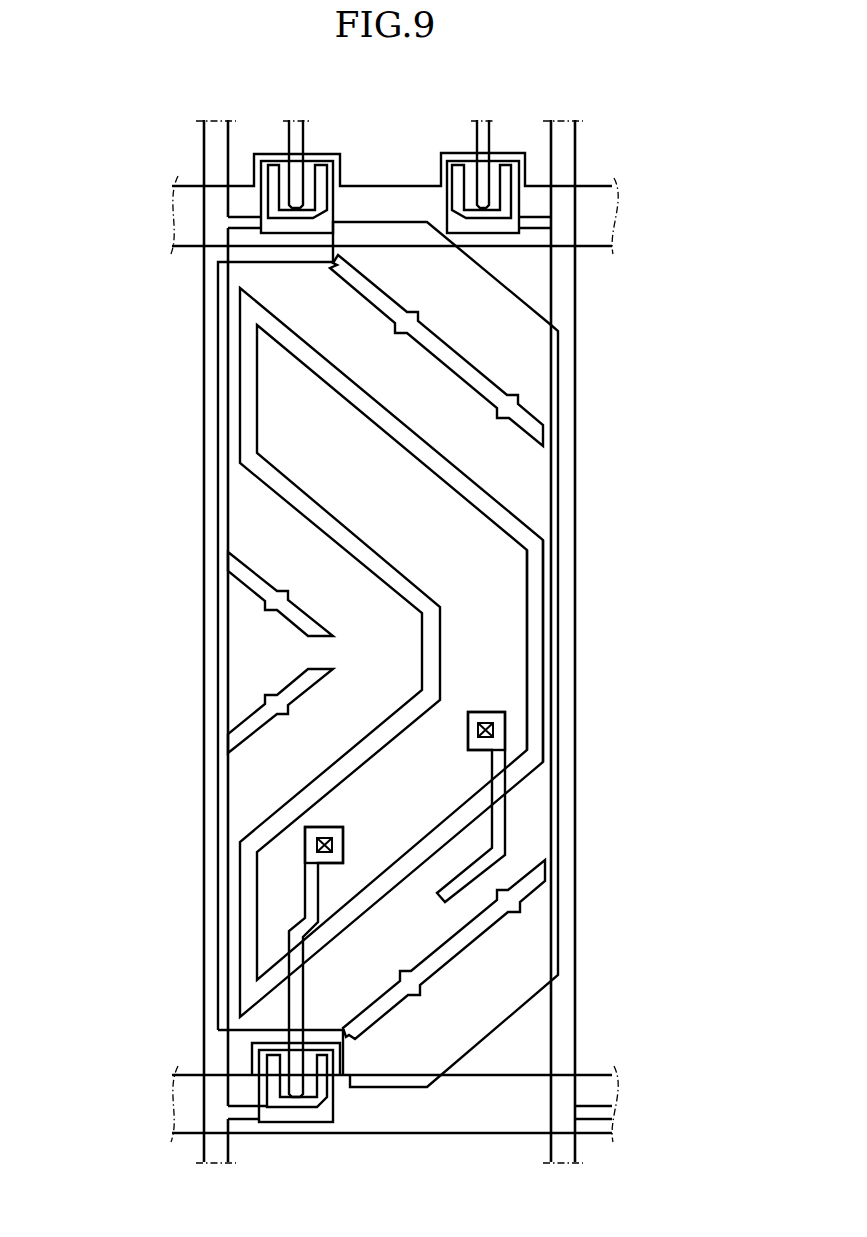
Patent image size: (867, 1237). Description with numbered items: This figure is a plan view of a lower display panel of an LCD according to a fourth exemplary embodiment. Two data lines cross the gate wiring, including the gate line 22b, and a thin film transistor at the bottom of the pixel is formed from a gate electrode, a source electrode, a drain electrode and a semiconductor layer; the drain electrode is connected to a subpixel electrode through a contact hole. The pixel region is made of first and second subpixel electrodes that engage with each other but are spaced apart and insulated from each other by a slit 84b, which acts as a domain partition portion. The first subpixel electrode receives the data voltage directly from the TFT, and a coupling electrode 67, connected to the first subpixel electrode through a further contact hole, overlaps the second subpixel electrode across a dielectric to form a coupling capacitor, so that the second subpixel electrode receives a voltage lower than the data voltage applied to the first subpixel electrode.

The slit 84b is at (434, 462).
The coupling electrode 67 is at (505, 808).
The gate line 22b is at (188, 1118).